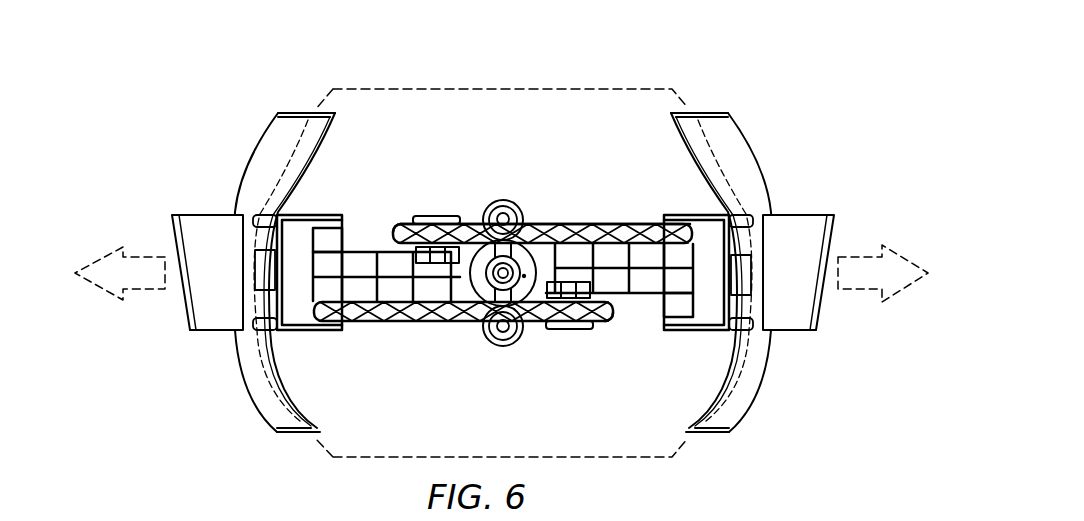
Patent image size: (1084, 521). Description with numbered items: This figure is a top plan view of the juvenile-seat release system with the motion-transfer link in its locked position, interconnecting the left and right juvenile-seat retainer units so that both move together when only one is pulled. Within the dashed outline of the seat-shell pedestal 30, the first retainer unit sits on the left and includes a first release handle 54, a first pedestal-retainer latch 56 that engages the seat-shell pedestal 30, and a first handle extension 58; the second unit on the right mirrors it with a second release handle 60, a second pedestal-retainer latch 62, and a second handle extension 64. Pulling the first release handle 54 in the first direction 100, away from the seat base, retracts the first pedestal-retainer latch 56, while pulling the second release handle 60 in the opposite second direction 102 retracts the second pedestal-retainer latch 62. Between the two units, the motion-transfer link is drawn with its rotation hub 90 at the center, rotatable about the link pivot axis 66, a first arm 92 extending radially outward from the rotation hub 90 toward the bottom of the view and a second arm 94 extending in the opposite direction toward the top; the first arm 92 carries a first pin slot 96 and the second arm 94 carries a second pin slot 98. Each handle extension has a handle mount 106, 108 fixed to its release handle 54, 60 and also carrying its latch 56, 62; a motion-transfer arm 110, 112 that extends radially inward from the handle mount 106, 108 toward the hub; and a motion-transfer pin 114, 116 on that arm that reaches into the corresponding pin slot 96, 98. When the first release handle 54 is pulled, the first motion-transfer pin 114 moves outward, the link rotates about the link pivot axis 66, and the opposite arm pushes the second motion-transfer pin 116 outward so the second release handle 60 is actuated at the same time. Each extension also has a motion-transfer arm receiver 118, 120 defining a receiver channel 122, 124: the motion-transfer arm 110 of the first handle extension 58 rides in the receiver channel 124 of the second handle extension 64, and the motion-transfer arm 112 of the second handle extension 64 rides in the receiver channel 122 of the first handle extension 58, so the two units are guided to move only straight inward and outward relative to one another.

The seat-shell pedestal 30 is at (583, 90).
The first release handle 54 is at (181, 313).
The first pedestal-retainer latch 56 is at (252, 403).
The first handle extension 58 is at (390, 330).
The second release handle 60 is at (826, 309).
The second pedestal-retainer latch 62 is at (772, 160).
The second handle extension 64 is at (617, 220).
The link pivot axis 66 is at (518, 333).
The rotation hub 90 is at (483, 320).
The first arm 92 is at (513, 353).
The second arm 94 is at (523, 197).
The first pin slot 96 is at (493, 343).
The second pin slot 98 is at (510, 200).
The first direction 100 is at (143, 257).
The second direction 102 is at (857, 258).
The handle mount 106 is at (327, 325).
The handle mount 108 is at (680, 212).
The motion-transfer arm 110 is at (533, 323).
The motion-transfer arm 112 is at (543, 224).
The motion-transfer pin 114 is at (477, 322).
The motion-transfer pin 116 is at (492, 200).
The motion-transfer arm receiver 118 is at (436, 214).
The motion-transfer arm receiver 120 is at (590, 337).
The receiver channel 122 is at (402, 216).
The receiver channel 124 is at (600, 323).